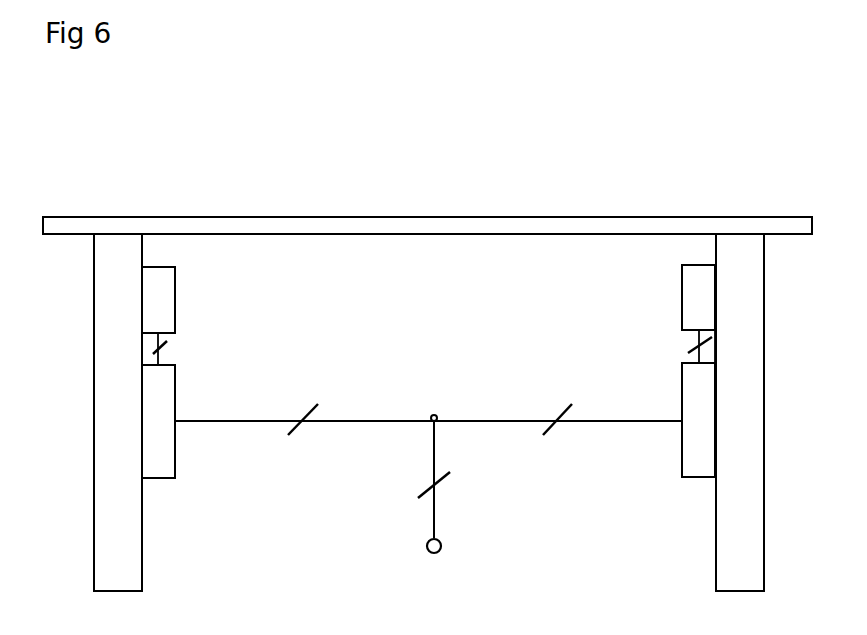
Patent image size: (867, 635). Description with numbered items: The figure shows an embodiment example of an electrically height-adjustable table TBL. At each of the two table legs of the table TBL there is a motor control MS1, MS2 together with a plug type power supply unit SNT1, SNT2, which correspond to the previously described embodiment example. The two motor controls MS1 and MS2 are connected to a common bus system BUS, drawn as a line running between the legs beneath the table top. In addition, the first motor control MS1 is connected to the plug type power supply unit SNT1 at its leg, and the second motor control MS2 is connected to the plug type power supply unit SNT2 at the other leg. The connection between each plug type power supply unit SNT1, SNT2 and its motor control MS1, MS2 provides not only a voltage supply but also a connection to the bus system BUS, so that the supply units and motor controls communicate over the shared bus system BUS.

The electrically height-adjustable table TBL is at (516, 167).
The plug type power supply unit SNT1 is at (178, 301).
The plug type power supply unit SNT2 is at (690, 287).
The first motor control MS1 is at (158, 478).
The second motor control MS2 is at (697, 478).
The bus system BUS is at (440, 550).